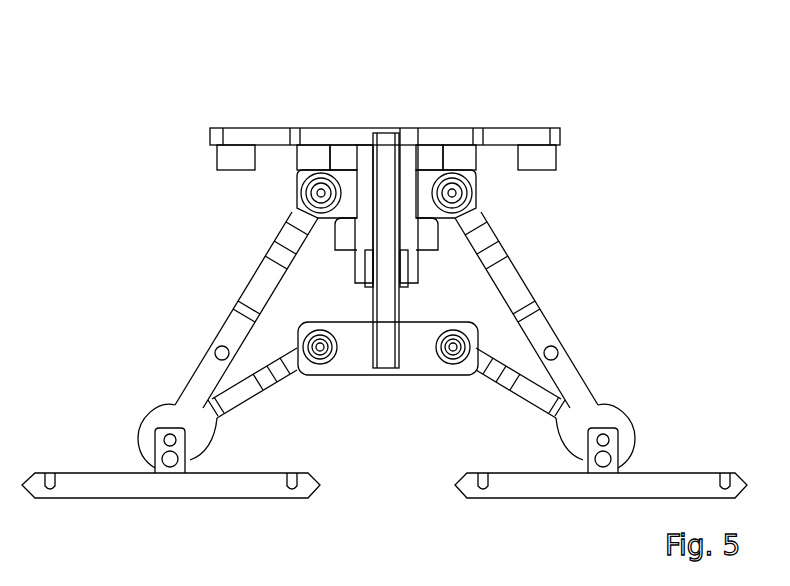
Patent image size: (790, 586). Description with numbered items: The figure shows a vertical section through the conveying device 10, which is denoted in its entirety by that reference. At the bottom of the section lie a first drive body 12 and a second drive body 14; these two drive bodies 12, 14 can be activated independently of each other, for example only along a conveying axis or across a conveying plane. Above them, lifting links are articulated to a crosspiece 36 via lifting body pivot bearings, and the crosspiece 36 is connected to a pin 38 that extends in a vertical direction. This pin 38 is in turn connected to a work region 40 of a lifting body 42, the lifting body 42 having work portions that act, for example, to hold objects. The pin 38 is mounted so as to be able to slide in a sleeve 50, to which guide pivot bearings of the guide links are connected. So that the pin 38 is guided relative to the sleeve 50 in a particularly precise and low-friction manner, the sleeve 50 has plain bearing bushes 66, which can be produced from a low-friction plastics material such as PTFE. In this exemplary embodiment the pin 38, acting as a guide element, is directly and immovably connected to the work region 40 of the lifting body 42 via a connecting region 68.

The conveying device 10 is at (384, 297).
The first drive body 12 is at (194, 500).
The second drive body 14 is at (553, 500).
The crosspiece 36 is at (422, 358).
The pin 38 is at (386, 366).
The work region 40 is at (410, 140).
The lifting body 42 is at (473, 106).
The sleeve 50 is at (360, 240).
The plain bearing bushes 66 is at (368, 182).
The connecting region 68 is at (374, 140).